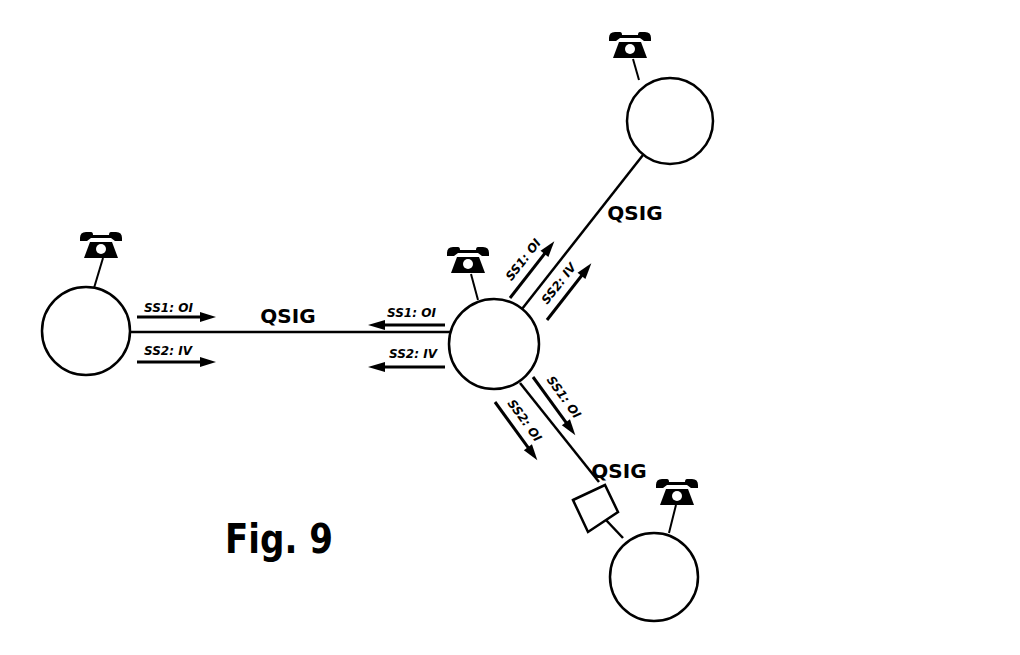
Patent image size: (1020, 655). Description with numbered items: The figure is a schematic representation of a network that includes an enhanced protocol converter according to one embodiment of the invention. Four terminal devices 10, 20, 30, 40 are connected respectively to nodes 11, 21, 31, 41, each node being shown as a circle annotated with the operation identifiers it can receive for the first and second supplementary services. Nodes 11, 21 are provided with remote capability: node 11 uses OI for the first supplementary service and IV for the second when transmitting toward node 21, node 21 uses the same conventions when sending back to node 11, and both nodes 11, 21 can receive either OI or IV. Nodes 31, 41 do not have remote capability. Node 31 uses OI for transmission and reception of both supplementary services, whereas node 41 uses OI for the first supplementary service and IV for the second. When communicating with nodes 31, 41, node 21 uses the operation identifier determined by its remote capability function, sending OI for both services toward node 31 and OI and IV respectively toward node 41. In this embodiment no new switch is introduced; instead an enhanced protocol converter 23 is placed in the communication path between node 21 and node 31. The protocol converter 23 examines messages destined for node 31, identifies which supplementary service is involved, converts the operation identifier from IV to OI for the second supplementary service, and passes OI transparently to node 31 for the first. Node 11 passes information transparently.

The terminal device 10 is at (180, 226).
The node 11 is at (97, 358).
The terminal device 20 is at (466, 236).
The node 21 is at (620, 327).
The enhanced protocol converter 23 is at (577, 504).
The terminal device 30 is at (760, 508).
The node 31 is at (618, 558).
The terminal device 40 is at (720, 38).
The node 41 is at (640, 100).